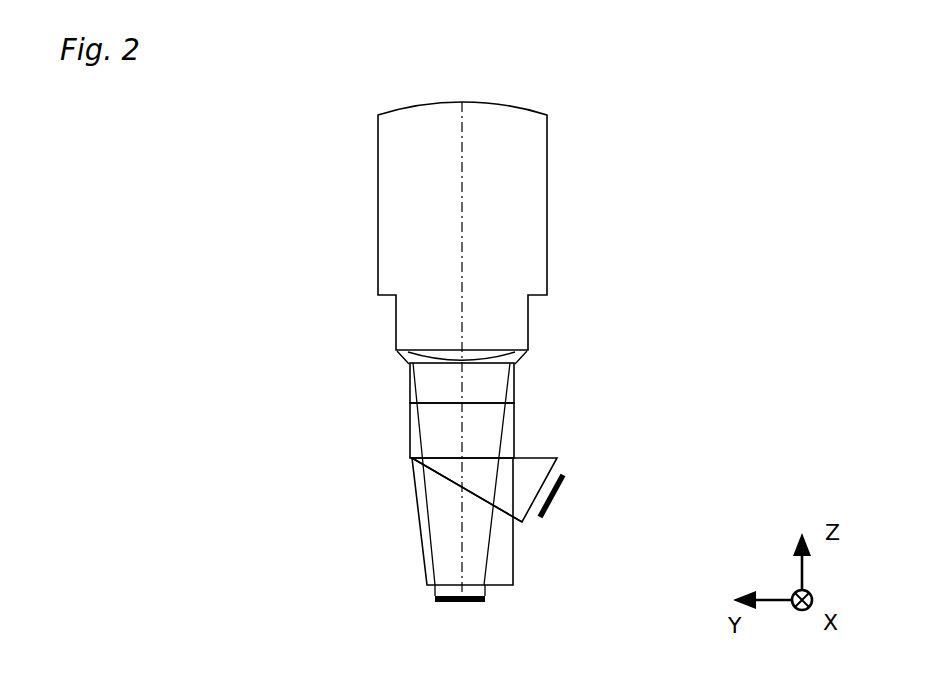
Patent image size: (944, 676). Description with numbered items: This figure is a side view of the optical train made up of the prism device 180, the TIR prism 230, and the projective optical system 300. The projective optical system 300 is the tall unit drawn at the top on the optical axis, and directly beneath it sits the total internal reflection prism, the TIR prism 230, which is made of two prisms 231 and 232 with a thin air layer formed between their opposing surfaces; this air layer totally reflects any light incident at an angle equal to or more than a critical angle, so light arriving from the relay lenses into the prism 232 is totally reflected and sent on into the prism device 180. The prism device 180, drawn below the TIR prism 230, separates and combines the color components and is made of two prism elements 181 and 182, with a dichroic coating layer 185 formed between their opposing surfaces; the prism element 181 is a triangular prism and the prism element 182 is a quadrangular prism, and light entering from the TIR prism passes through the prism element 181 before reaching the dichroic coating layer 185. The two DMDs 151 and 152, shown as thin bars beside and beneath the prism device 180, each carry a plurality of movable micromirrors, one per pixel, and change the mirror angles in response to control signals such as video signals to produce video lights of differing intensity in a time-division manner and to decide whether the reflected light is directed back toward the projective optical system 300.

The projective optical system 300 is at (395, 170).
The TIR prism 230 is at (366, 408).
The prism 232 is at (445, 386).
The prism 231 is at (443, 421).
The prism device 180 is at (398, 532).
The prism element 181 is at (432, 515).
The prism element 182 is at (445, 548).
The dichroic coating layer 185 is at (442, 478).
The DMD 151 is at (557, 495).
The DMD 152 is at (477, 605).